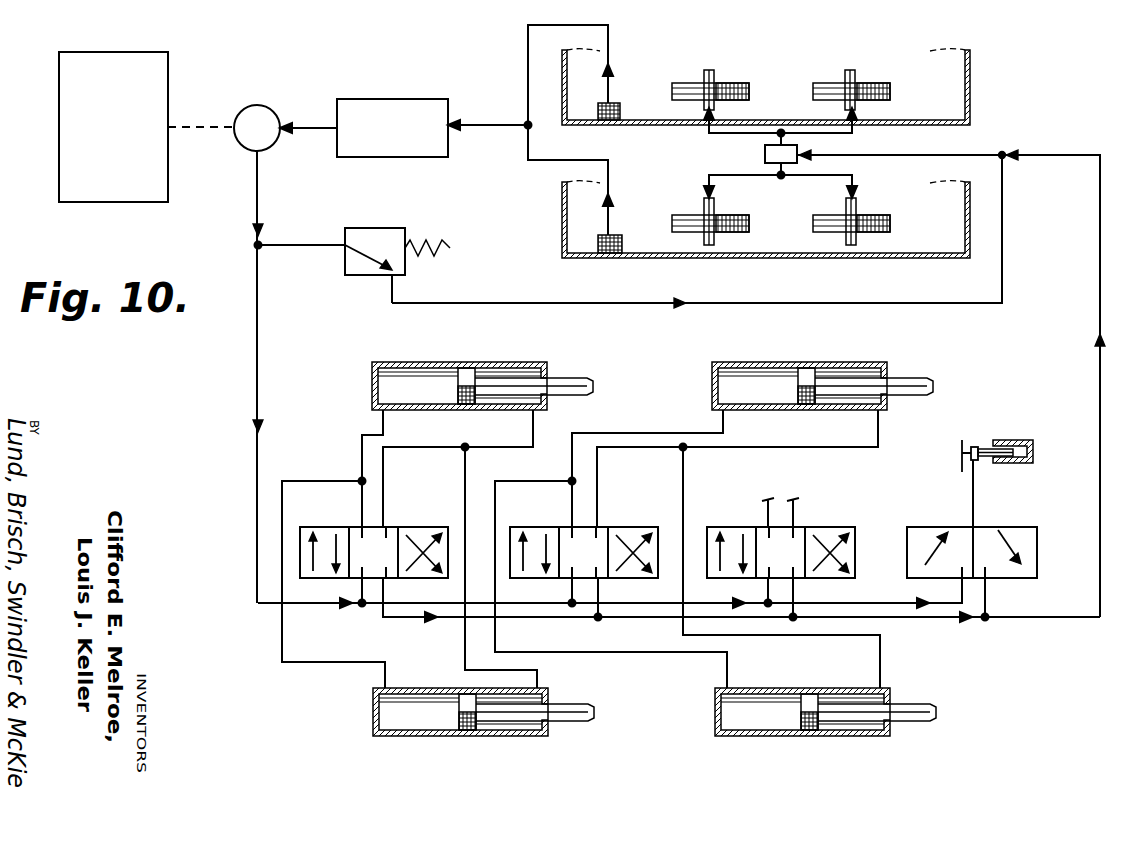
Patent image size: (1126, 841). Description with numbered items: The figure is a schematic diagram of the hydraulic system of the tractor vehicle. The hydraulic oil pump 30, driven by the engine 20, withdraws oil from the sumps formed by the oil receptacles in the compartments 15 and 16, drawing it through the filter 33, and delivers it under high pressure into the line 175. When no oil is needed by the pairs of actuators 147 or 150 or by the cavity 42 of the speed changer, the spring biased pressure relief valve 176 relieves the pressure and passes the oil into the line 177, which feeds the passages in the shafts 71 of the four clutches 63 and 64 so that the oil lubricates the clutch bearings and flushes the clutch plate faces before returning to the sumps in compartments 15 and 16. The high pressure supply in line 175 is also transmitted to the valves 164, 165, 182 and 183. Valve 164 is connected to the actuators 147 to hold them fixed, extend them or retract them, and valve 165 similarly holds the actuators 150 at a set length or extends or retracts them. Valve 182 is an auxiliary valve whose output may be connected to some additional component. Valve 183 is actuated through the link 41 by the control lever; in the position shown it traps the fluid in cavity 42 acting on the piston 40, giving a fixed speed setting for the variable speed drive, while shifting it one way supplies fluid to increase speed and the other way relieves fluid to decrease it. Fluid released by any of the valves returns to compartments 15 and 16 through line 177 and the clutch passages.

The engine 20 is at (113, 48).
The hydraulic oil pump 30 is at (259, 100).
The filter 33 is at (397, 97).
The spring biased pressure relief valve 176 is at (372, 232).
The line 175 is at (258, 348).
The line 177 is at (975, 152).
The compartment 16 is at (972, 63).
The compartment 15 is at (562, 209).
The wheel shaft 71 is at (703, 75).
The clutch 63 is at (732, 78).
The clutch 64 is at (874, 78).
The actuators 147 is at (447, 360).
The actuators 150 is at (770, 360).
The valve 164 is at (418, 527).
The valve 165 is at (620, 527).
The auxiliary valve 182 is at (828, 527).
The valve 183 is at (1000, 527).
The piston rod 40 is at (985, 447).
The cavity 42 is at (1020, 440).
The link 41 is at (973, 490).